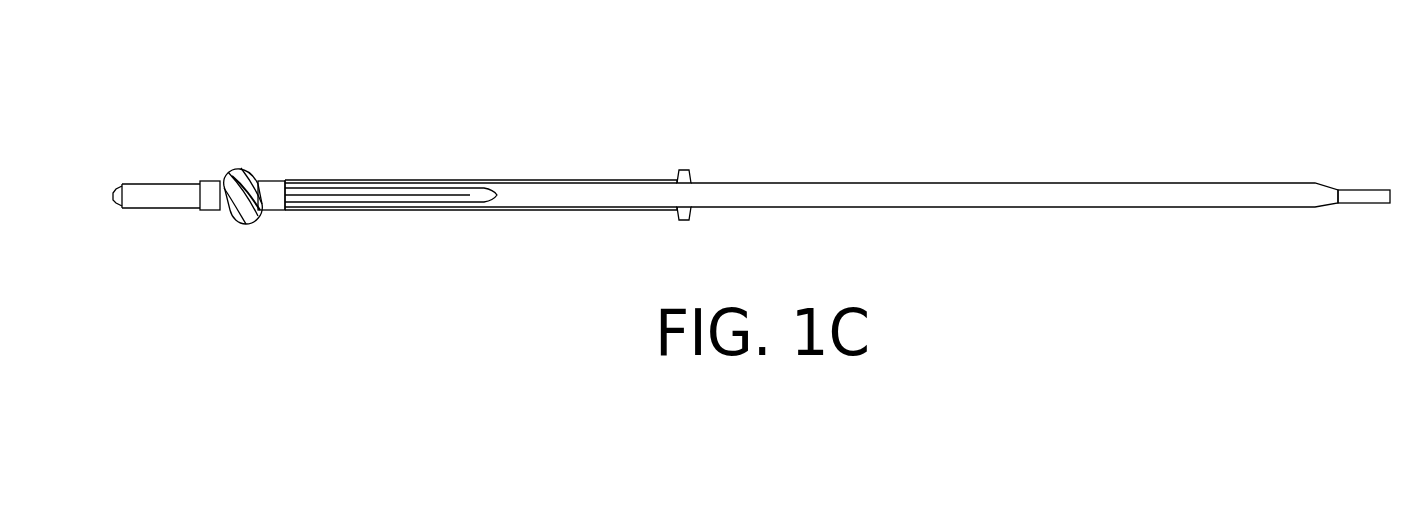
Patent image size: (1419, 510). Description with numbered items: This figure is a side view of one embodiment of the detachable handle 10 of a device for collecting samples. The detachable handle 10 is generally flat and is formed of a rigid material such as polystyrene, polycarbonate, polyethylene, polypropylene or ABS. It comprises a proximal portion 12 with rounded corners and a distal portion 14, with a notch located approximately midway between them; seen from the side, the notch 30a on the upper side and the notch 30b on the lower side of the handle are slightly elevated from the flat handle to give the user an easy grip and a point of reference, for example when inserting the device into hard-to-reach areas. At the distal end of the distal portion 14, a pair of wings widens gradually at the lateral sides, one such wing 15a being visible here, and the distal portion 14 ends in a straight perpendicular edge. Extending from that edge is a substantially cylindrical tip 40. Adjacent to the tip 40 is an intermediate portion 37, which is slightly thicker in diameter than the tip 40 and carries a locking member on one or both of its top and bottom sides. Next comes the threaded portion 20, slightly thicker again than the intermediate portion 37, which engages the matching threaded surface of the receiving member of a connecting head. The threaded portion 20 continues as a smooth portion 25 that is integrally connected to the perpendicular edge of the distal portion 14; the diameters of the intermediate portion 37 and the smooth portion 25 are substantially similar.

The detachable handle 10 is at (890, 126).
The proximal portion 12 is at (1025, 196).
The distal portion 14 is at (534, 197).
The wing 15a is at (347, 196).
The threaded portion 20 is at (235, 166).
The smooth portion 25 is at (275, 182).
The notch 30a is at (683, 170).
The notch 30b is at (683, 220).
The intermediate portion 37 is at (208, 196).
The tip 40 is at (145, 196).